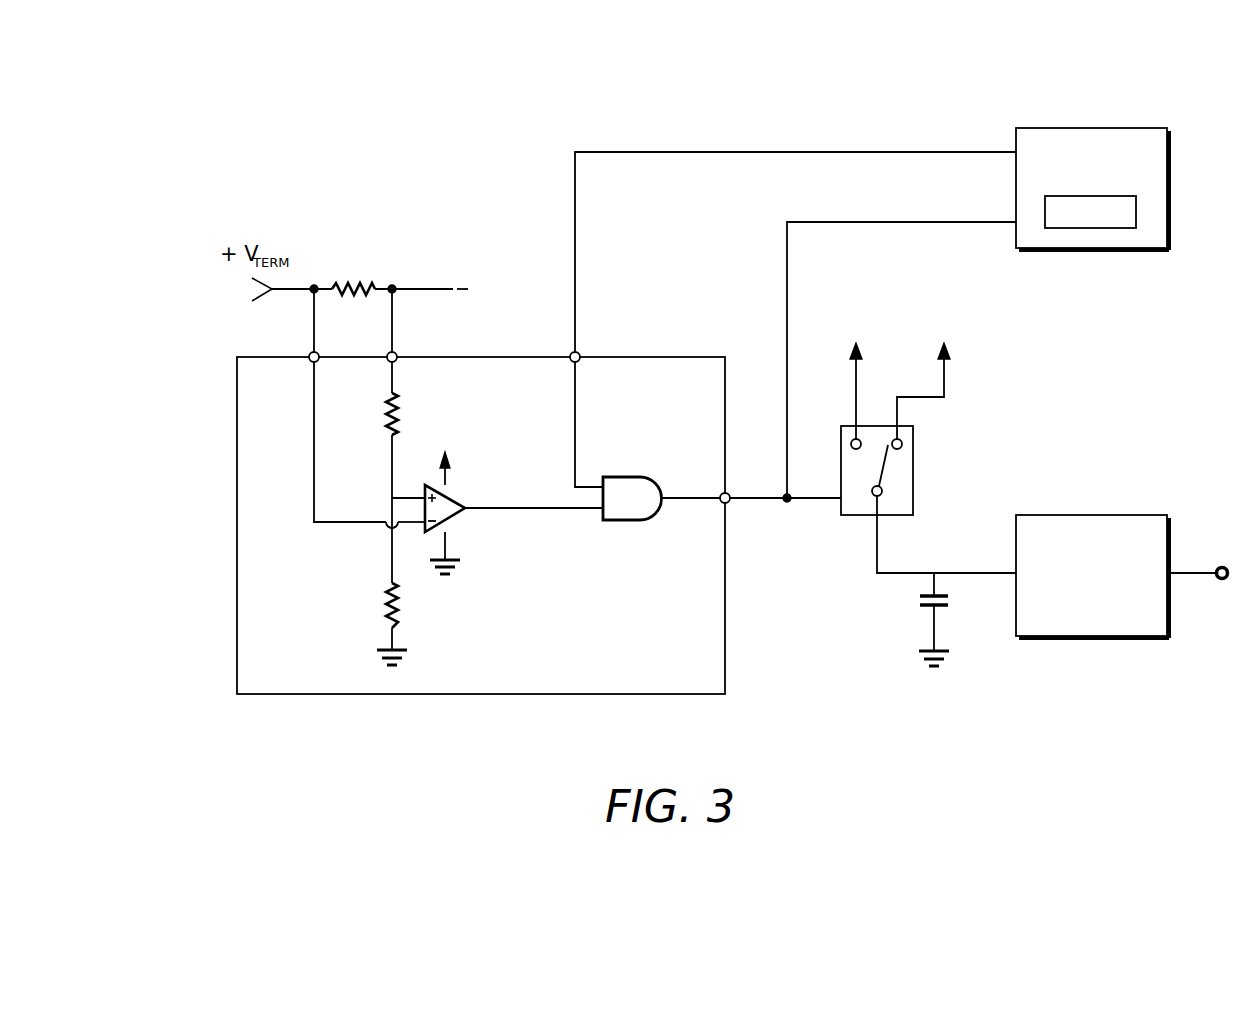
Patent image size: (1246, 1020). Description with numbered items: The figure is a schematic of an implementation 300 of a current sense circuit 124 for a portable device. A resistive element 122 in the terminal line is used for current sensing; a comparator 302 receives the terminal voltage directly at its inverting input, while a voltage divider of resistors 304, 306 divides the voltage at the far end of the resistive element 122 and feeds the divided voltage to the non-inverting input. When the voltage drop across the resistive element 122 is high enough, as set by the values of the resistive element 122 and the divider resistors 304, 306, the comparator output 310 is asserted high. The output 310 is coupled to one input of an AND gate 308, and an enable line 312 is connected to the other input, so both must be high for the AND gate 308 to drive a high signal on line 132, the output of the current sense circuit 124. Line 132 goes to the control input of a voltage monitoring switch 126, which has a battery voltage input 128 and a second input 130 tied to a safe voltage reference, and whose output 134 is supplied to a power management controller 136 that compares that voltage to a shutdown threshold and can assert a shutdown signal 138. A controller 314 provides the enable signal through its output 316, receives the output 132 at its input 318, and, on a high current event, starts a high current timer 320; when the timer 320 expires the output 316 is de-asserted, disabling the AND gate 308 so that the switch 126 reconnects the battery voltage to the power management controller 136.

The resistive element 122 is at (352, 283).
The current sense circuit 124 is at (236, 524).
The voltage monitoring switch 126 is at (915, 470).
The battery voltage input 128 is at (852, 387).
The second input 130 is at (946, 386).
The line 132 is at (760, 501).
The input 134 is at (985, 576).
The power management controller 136 is at (1150, 514).
The shutdown signal 138 is at (1192, 577).
The implementation 300 is at (894, 762).
The comparator 302 is at (449, 494).
The divider resistor 304 is at (388, 406).
The divider resistor 306 is at (388, 596).
The AND gate 308 is at (620, 476).
The comparator output 310 is at (534, 511).
The enable line 312 is at (577, 389).
The controller 314 is at (1150, 128).
The output 316 is at (1013, 151).
The input 318 is at (1013, 221).
The high current timer 320 is at (1091, 229).